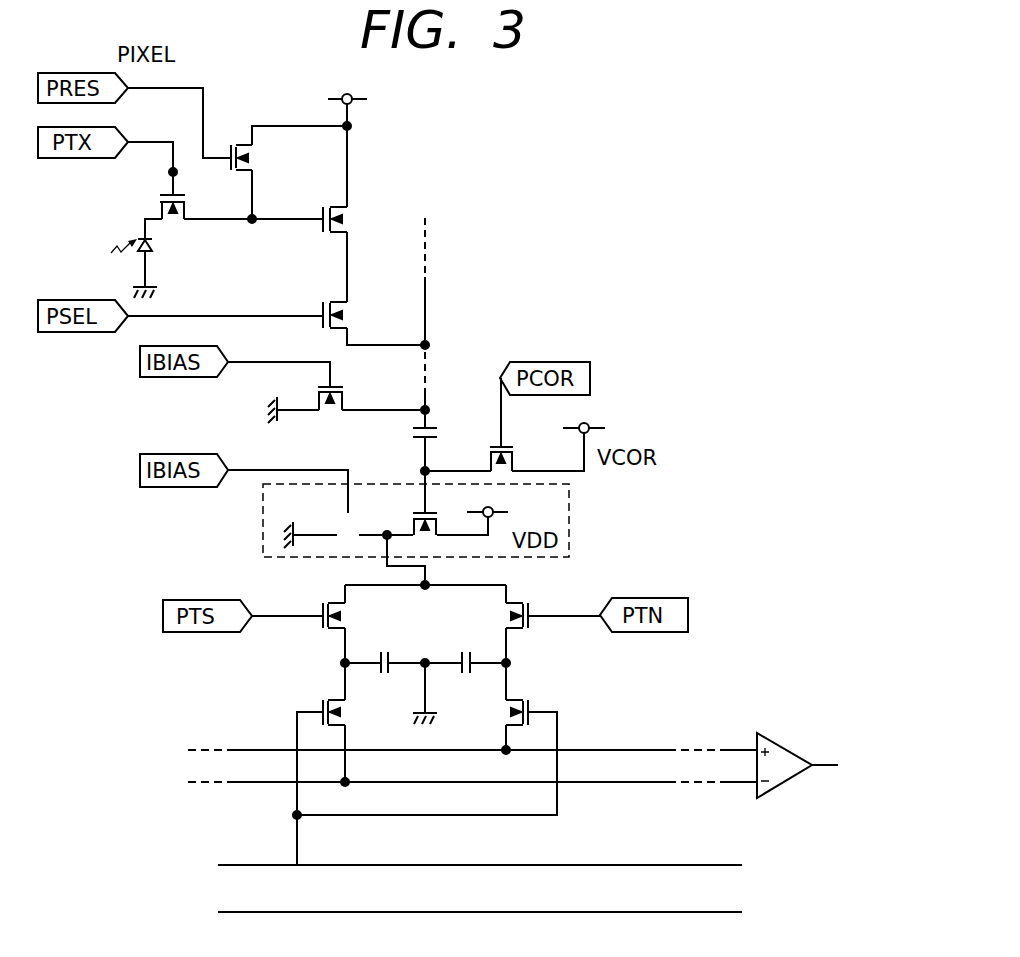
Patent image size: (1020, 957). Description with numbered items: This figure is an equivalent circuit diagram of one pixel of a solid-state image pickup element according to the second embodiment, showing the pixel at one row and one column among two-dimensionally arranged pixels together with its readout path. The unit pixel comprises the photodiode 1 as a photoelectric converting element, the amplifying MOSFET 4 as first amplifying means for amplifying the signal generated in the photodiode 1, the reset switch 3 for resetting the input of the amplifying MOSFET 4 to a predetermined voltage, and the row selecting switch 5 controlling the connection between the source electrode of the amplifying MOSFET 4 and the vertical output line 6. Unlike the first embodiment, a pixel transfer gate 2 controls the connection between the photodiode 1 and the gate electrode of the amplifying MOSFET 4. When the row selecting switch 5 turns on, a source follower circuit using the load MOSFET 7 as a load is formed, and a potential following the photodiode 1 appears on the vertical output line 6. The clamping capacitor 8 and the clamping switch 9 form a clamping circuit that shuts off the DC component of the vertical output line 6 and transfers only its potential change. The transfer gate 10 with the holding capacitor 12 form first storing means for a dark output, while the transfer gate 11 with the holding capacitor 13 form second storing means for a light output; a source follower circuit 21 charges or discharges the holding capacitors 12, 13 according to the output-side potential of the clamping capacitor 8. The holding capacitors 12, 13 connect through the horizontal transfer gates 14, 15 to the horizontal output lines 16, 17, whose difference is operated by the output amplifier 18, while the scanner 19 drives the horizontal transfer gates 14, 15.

The photodiode 1 is at (152, 243).
The pixel transfer gate 2 is at (160, 208).
The reset switch 3 is at (250, 158).
The amplifying MOSFET 4 is at (350, 215).
The row selecting switch 5 is at (350, 311).
The vertical output line 6 is at (428, 318).
The load MOSFET 7 is at (345, 412).
The clamping capacitor 8 is at (440, 432).
The clamping switch 9 is at (518, 464).
The transfer gate 10 is at (320, 608).
The transfer gate 11 is at (535, 606).
The holding capacitor 12 is at (385, 651).
The holding capacitor 13 is at (462, 651).
The horizontal transfer gate 14 is at (335, 700).
The horizontal transfer gate 15 is at (515, 700).
The horizontal output line 16 is at (598, 781).
The horizontal output line 17 is at (649, 749).
The output amplifier 18 is at (787, 748).
The horizontal scanning circuit 19 is at (656, 865).
The source follower circuit 21 is at (572, 520).